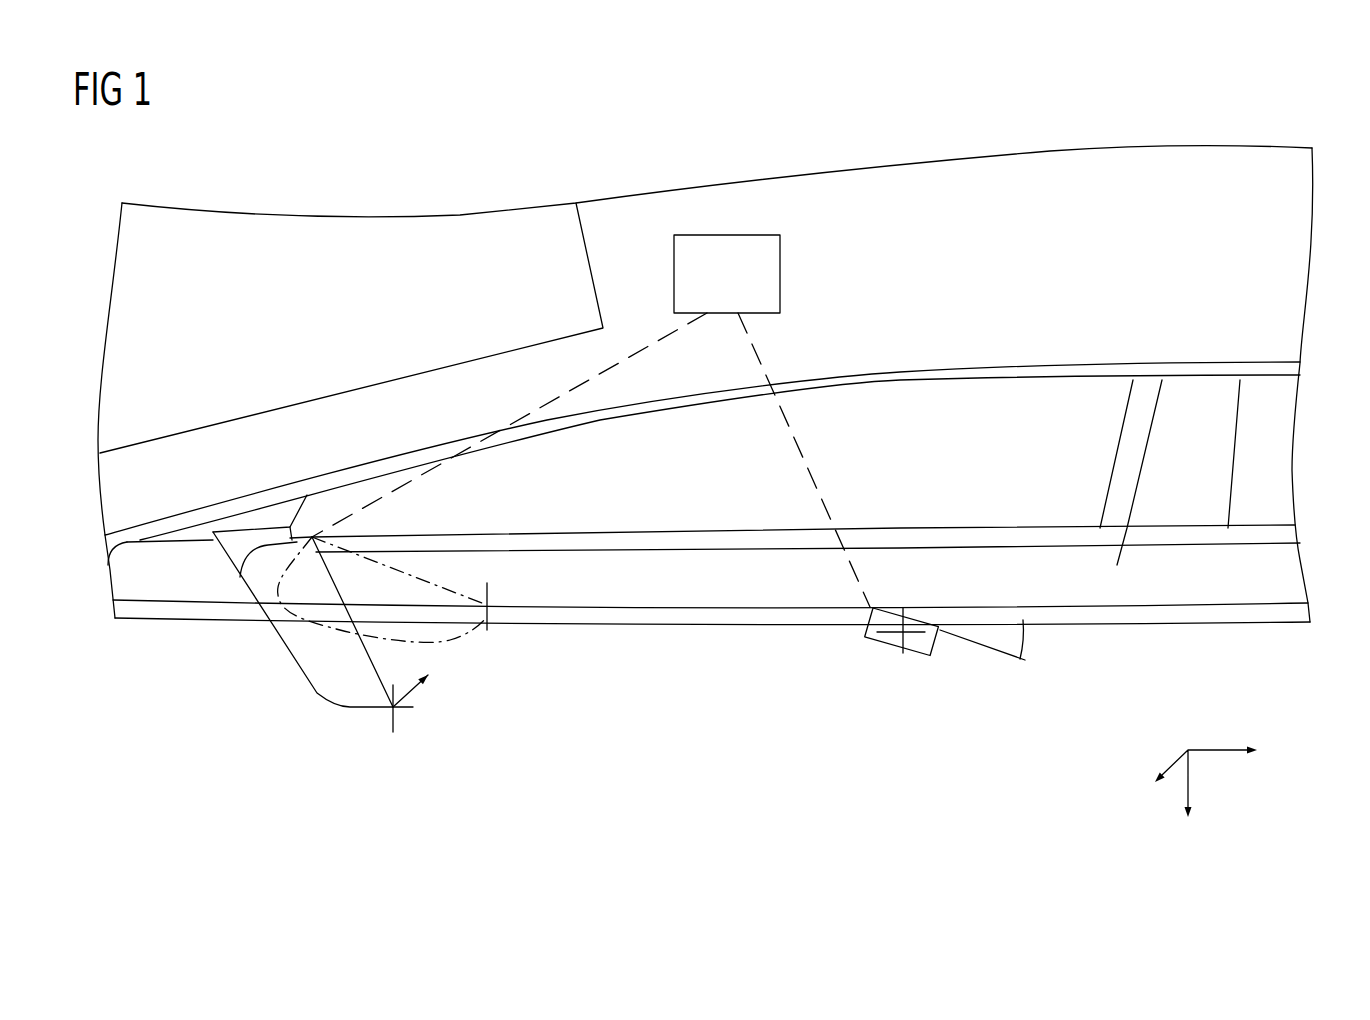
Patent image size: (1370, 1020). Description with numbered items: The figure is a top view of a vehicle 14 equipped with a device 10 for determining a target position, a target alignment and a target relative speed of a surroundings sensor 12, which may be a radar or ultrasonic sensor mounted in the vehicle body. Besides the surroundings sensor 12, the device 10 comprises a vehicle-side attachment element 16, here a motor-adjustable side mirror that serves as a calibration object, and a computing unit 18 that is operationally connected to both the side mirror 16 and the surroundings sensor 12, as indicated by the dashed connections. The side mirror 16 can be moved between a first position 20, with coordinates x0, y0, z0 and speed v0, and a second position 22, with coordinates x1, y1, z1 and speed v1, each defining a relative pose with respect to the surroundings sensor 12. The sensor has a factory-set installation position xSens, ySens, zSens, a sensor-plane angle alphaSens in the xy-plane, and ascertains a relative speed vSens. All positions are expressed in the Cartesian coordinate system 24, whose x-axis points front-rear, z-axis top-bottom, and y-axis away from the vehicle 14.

The device 10 is at (725, 747).
The surroundings sensor 12 is at (918, 647).
The vehicle 14 is at (1278, 570).
The vehicle-side attachment element 16 is at (317, 653).
The computing unit 18 is at (727, 255).
The first position 20 is at (371, 734).
The second position 22 is at (507, 620).
The Cartesian coordinate system 24 is at (1252, 795).